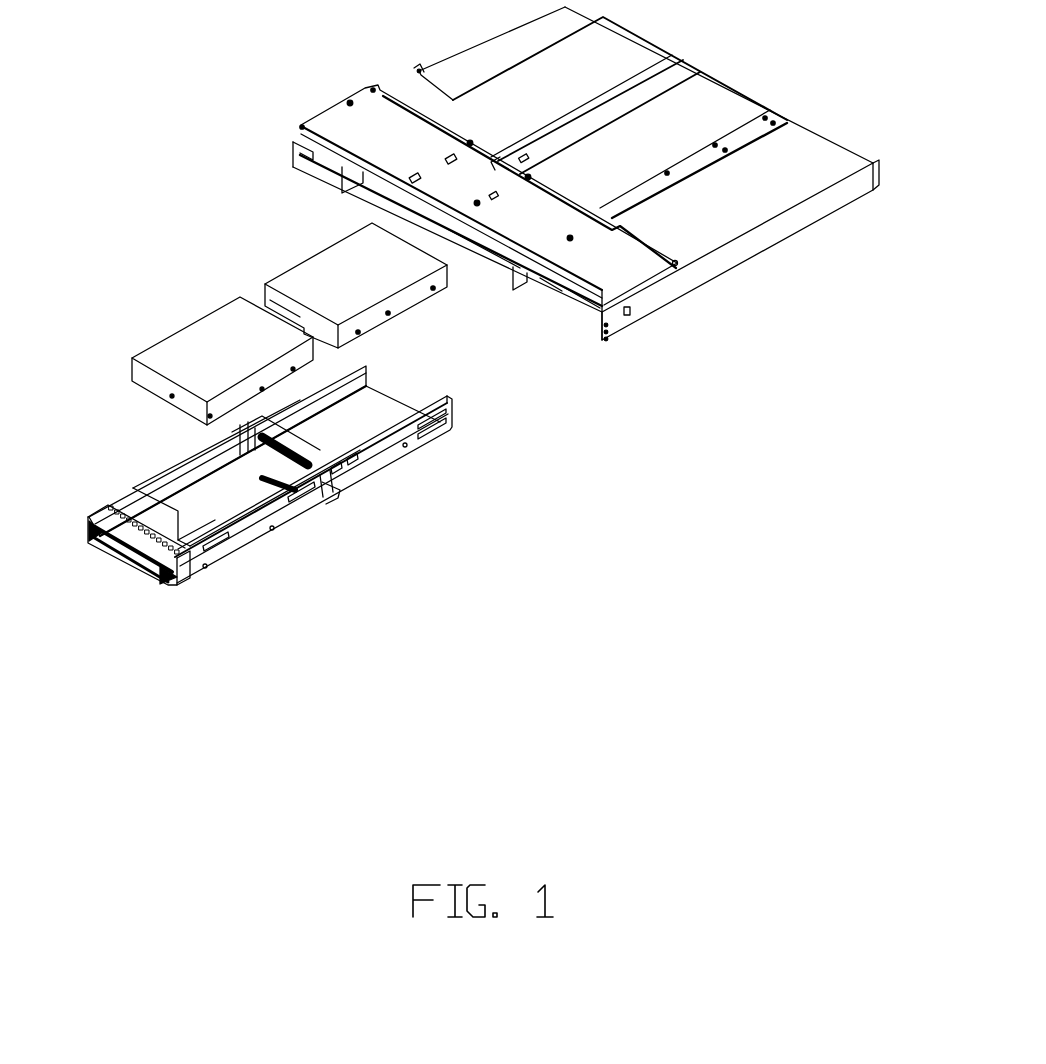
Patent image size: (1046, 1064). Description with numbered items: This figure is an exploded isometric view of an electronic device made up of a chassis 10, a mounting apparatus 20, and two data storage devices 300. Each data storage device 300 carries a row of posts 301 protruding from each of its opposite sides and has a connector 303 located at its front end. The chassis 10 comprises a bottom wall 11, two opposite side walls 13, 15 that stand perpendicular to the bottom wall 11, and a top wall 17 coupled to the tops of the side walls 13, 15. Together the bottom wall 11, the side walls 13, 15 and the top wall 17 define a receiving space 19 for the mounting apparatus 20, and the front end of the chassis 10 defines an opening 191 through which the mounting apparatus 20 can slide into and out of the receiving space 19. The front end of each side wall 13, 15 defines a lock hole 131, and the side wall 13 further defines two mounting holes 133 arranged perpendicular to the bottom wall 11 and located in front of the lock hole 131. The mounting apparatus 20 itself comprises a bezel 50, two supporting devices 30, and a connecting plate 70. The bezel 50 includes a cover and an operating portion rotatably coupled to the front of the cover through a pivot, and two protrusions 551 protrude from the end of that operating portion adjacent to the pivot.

The chassis 10 is at (340, 113).
The bottom wall 11 is at (500, 270).
The side wall 13 is at (650, 305).
The lock hole 131 is at (626, 316).
The mounting holes 133 is at (603, 335).
The side wall 15 is at (524, 285).
The top wall 17 is at (637, 265).
The receiving space 19 is at (586, 316).
The opening 191 is at (563, 300).
The mounting apparatus 20 is at (110, 481).
The supporting devices 30 is at (370, 433).
The bezel 50 is at (175, 590).
The protrusions 551 is at (172, 578).
The connecting plate 70 is at (335, 490).
The data storage devices 300 is at (217, 333).
The posts 301 is at (217, 412).
The connector 303 is at (270, 312).